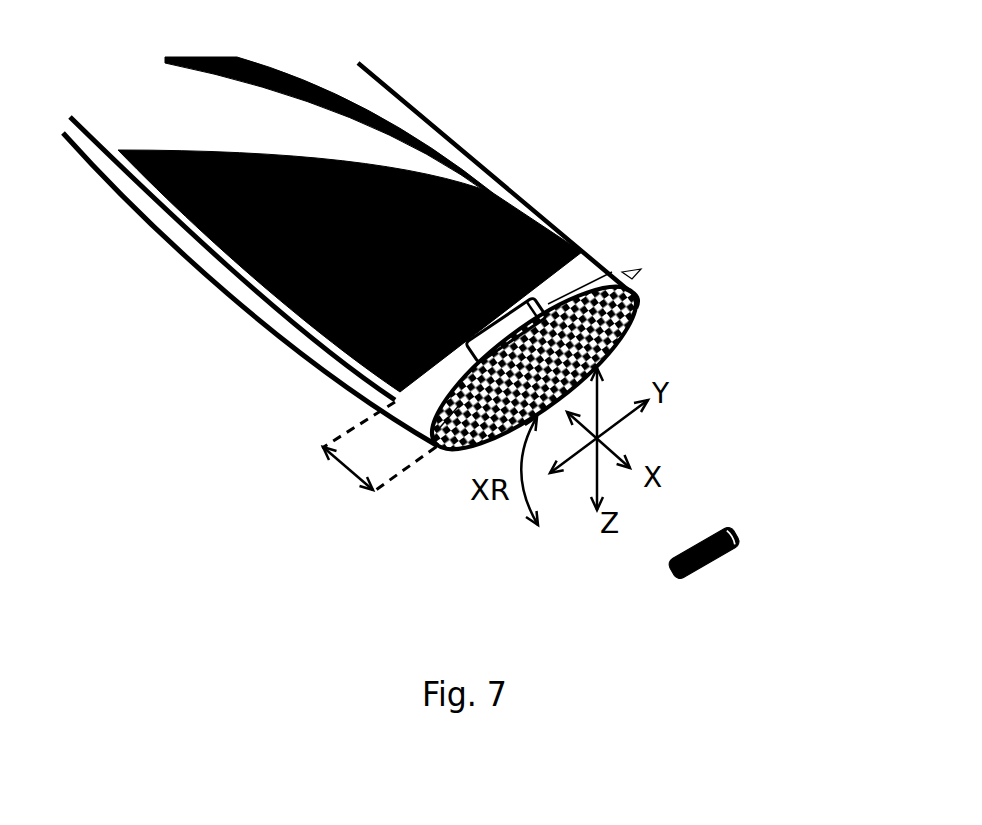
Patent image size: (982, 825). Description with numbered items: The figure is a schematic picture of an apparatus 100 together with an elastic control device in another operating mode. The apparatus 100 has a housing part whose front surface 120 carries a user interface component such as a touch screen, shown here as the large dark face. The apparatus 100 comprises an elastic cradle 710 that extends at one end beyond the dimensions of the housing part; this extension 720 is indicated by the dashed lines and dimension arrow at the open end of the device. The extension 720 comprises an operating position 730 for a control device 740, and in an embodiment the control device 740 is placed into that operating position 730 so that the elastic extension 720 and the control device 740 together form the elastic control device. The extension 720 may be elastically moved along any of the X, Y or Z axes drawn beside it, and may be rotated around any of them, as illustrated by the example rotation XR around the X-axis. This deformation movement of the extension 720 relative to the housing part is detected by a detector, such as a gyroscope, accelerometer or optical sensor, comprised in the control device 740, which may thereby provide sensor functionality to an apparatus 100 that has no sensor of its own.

The apparatus 100 is at (70, 217).
The front surface 120 is at (395, 102).
The elastic cradle 710 is at (152, 228).
The extension 720 is at (361, 454).
The operating position 730 is at (603, 260).
The control device 740 is at (738, 550).